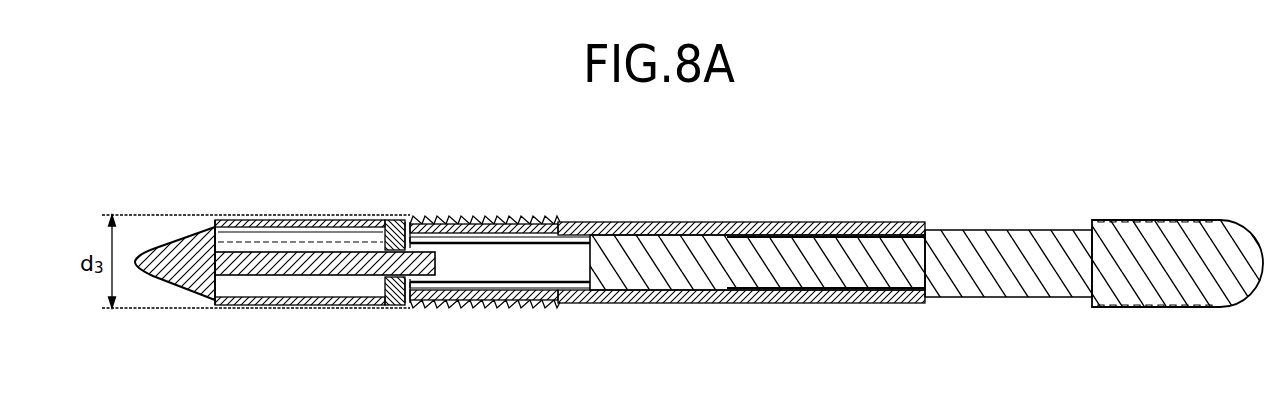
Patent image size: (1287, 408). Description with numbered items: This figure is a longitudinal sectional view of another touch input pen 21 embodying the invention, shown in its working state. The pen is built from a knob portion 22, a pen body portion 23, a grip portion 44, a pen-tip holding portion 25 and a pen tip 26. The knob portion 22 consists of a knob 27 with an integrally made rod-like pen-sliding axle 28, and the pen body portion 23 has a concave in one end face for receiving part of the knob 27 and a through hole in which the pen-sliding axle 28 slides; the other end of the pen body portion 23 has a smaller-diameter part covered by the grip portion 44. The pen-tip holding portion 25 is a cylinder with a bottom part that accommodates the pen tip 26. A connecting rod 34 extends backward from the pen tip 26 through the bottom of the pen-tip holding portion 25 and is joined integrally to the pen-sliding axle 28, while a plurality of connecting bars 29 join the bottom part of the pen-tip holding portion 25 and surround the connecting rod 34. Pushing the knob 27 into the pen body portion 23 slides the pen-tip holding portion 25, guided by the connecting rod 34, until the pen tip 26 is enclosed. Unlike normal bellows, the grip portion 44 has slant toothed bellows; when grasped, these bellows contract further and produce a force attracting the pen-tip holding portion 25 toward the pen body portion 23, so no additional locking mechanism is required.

The touch input pen 21 is at (848, 216).
The knob portion 22 is at (1158, 216).
The pen body portion 23 is at (702, 223).
The pen-tip holding portion 25 is at (275, 220).
The pen tip 26 is at (182, 278).
The knob 27 is at (1044, 287).
The pen-sliding axle 28 is at (702, 302).
The connecting bars 29 is at (573, 242).
The connecting rod 34 is at (320, 275).
The grip portion 44 is at (507, 218).